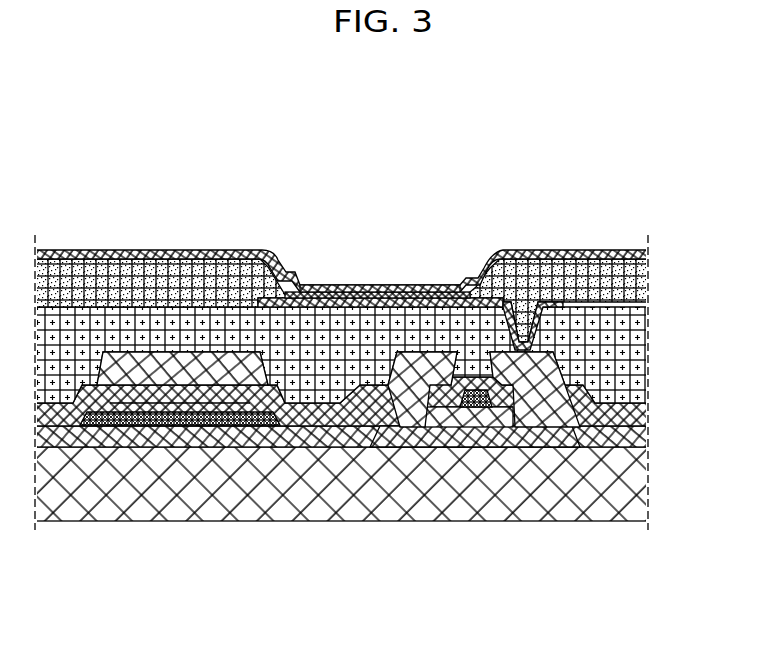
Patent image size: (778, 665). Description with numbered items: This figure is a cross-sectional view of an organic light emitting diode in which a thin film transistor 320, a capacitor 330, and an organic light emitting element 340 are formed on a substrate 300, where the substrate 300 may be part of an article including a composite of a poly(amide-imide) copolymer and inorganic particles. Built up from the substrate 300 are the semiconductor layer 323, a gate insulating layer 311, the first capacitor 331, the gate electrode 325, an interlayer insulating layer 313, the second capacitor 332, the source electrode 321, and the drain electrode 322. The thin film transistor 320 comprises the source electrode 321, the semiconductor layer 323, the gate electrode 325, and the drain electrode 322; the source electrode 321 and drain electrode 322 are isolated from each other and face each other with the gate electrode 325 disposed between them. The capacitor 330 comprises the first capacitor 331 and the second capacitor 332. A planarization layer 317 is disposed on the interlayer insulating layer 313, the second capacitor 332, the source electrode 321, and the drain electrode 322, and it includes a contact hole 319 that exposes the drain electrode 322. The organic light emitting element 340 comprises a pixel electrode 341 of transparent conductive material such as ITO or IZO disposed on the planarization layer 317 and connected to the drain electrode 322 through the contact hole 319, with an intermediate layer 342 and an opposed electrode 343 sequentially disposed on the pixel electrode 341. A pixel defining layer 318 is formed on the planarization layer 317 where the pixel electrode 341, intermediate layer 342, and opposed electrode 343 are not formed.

The substrate 300 is at (632, 487).
The gate insulating layer 311 is at (637, 438).
The interlayer insulating layer 313 is at (642, 415).
The planarization layer 317 is at (623, 357).
The pixel defining layer 318 is at (627, 285).
The contact hole 319 is at (529, 325).
The thin film transistor 320 is at (473, 498).
The source electrode 321 is at (413, 478).
The drain electrode 322 is at (535, 478).
The semiconductor layer 323 is at (450, 432).
The gate electrode 325 is at (489, 497).
The capacitor 330 is at (180, 492).
The first capacitor 331 is at (135, 418).
The second capacitor 332 is at (205, 383).
The organic light emitting element 340 is at (380, 234).
The pixel electrode 341 is at (322, 301).
The intermediate layer 342 is at (375, 297).
The opposed electrode 343 is at (303, 197).